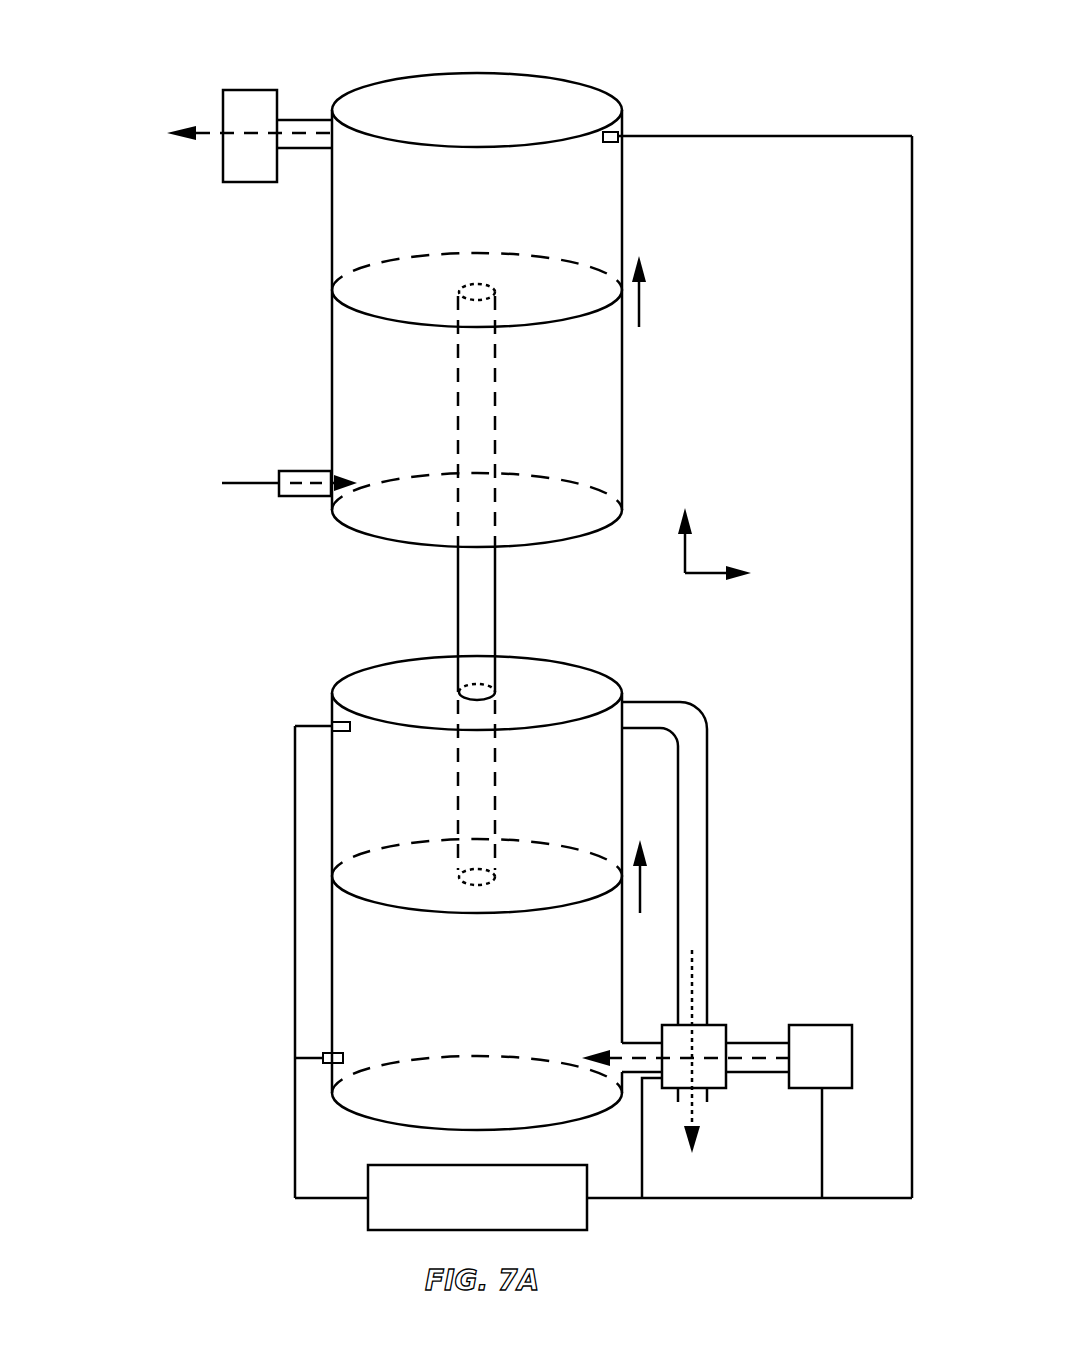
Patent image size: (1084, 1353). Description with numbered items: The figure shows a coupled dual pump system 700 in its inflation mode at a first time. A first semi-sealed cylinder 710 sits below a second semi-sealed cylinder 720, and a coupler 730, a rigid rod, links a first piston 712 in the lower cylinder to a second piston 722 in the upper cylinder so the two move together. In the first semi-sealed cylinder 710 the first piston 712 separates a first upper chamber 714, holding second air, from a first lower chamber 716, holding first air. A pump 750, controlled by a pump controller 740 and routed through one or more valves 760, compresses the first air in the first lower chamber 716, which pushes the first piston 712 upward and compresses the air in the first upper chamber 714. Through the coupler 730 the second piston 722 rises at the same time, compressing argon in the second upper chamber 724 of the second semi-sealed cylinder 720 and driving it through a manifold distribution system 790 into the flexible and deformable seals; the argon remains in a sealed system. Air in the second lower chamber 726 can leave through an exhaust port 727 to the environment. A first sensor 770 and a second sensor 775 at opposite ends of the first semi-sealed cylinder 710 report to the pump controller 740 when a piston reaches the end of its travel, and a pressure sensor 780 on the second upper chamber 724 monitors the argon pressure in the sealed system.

The coupled dual pump system 700 is at (705, 53).
The first semi-sealed cylinder 710 is at (588, 668).
The first piston 712 is at (542, 841).
The first upper chamber 714 is at (472, 779).
The first lower chamber 716 is at (551, 916).
The second semi-sealed cylinder 720 is at (588, 84).
The second piston 722 is at (542, 256).
The second upper chamber 724 is at (471, 197).
The second lower chamber 726 is at (511, 328).
The exhaust port 727 is at (297, 470).
The coupler 730 is at (496, 565).
The pump controller 740 is at (554, 1165).
The pump 750 is at (845, 1025).
The valves 760 is at (720, 1025).
The first sensor 770 is at (341, 733).
The second sensor 775 is at (340, 1051).
The pressure sensor 780 is at (611, 144).
The manifold distribution system 790 is at (262, 90).